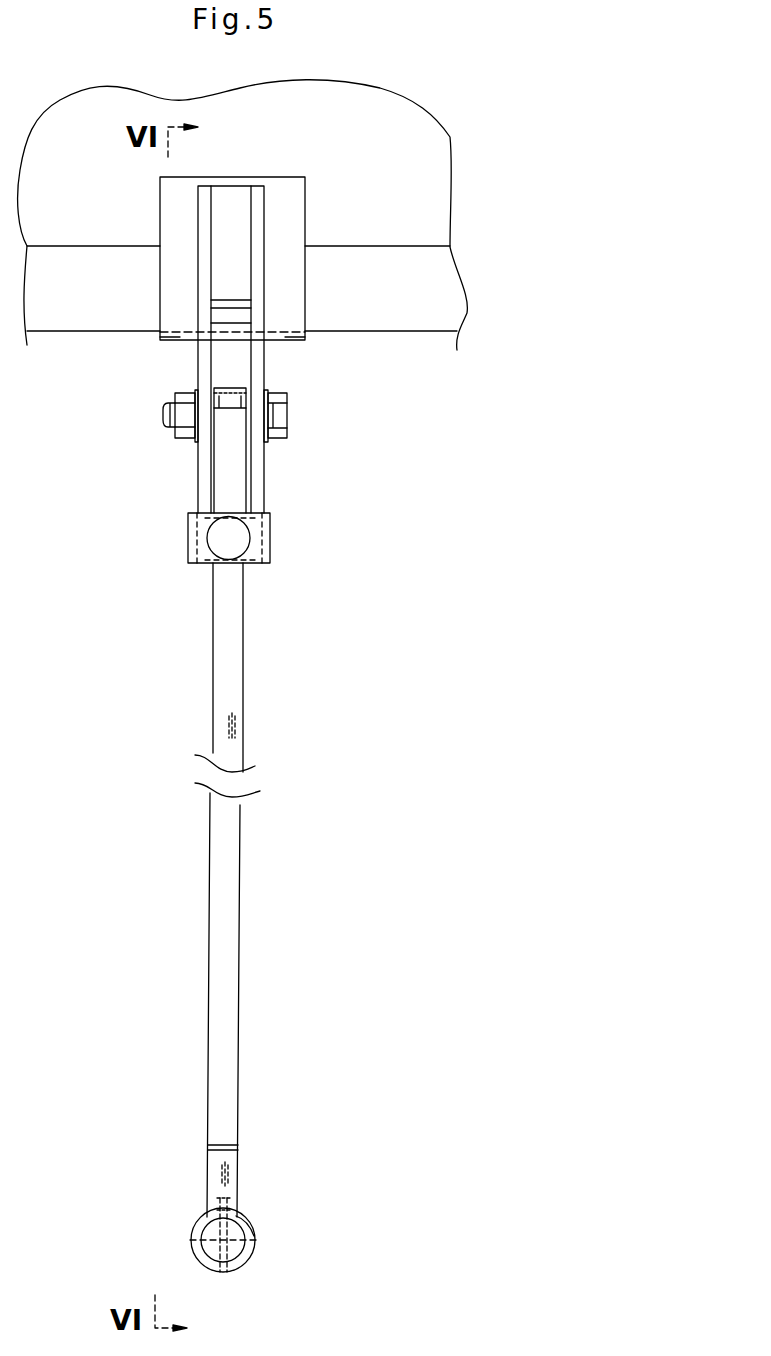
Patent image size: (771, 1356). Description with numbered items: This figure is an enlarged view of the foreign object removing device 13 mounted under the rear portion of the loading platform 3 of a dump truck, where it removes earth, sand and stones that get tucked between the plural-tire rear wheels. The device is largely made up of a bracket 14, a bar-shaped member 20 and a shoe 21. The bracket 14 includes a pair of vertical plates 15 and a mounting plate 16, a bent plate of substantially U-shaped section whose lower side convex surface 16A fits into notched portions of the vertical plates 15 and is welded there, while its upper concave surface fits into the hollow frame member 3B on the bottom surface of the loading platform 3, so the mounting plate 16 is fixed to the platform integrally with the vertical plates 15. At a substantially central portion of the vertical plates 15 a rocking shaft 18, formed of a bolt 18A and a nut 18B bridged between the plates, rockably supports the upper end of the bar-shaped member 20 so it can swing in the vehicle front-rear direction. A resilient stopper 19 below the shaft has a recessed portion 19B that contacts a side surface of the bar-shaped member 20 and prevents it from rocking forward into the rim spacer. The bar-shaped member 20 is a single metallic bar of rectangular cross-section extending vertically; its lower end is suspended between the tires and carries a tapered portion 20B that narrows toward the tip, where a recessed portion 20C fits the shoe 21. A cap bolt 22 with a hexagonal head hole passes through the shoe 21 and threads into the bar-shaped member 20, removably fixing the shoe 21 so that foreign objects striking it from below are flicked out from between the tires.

The loading platform 3 is at (437, 177).
The hollow frame member 3B is at (440, 270).
The foreign object removing device 13 is at (245, 685).
The bracket 14 is at (265, 375).
The vertical plates 15 is at (203, 487).
The mounting plate 16 is at (167, 337).
The lower side convex surface 16A is at (280, 337).
The rocking shaft 18 is at (277, 427).
The bolt 18A is at (275, 435).
The nut 18B is at (173, 433).
The stopper 19 is at (263, 553).
The recessed portion 19B is at (207, 538).
The bar-shaped member 20 is at (215, 640).
The tapered portion 20B is at (235, 1182).
The recessed portion 20C is at (247, 1223).
The shoe 21 is at (237, 1262).
The bolt 22 is at (218, 1238).